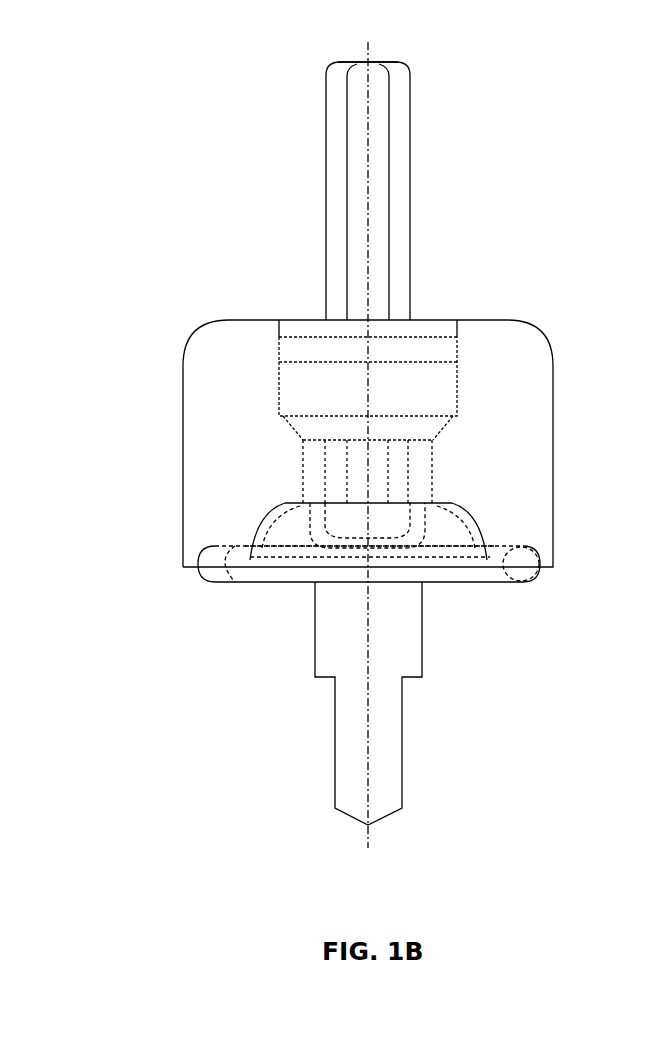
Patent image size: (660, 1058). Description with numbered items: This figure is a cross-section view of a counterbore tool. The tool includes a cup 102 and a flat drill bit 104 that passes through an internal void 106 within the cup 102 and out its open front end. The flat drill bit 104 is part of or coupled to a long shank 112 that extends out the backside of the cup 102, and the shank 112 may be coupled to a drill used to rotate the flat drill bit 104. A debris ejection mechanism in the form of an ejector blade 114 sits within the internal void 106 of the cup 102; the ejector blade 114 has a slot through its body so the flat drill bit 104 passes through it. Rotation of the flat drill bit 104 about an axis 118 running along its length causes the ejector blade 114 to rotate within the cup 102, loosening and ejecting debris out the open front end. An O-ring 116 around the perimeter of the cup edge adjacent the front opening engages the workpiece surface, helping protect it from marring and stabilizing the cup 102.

The cup 102 is at (212, 352).
The flat drill bit 104 is at (305, 706).
The internal void 106 is at (262, 510).
The shank 112 is at (333, 177).
The ejector blade 114 is at (292, 553).
The O-ring 116 is at (537, 568).
The axis 118 is at (366, 52).